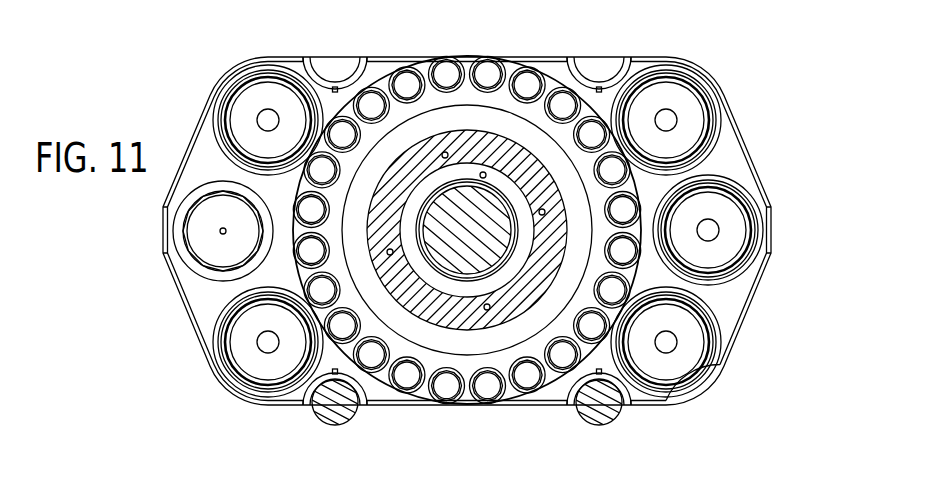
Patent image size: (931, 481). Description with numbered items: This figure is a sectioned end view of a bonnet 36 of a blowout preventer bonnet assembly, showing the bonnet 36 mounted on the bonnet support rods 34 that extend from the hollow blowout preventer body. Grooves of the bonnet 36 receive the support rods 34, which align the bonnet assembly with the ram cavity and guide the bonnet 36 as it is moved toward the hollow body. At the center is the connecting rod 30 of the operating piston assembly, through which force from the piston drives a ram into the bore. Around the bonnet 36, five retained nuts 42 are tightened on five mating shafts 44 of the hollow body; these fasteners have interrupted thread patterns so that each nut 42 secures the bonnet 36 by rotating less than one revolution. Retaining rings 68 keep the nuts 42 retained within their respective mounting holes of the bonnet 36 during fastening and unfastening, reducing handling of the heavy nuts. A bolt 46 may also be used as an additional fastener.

The connecting rod 30 is at (471, 247).
The bonnet support rod 34 is at (333, 421).
The bonnet 36 is at (737, 153).
The retained nut 42 is at (262, 77).
The mating shaft 44 is at (245, 112).
The bolt 46 is at (208, 235).
The retaining ring 68 is at (317, 128).